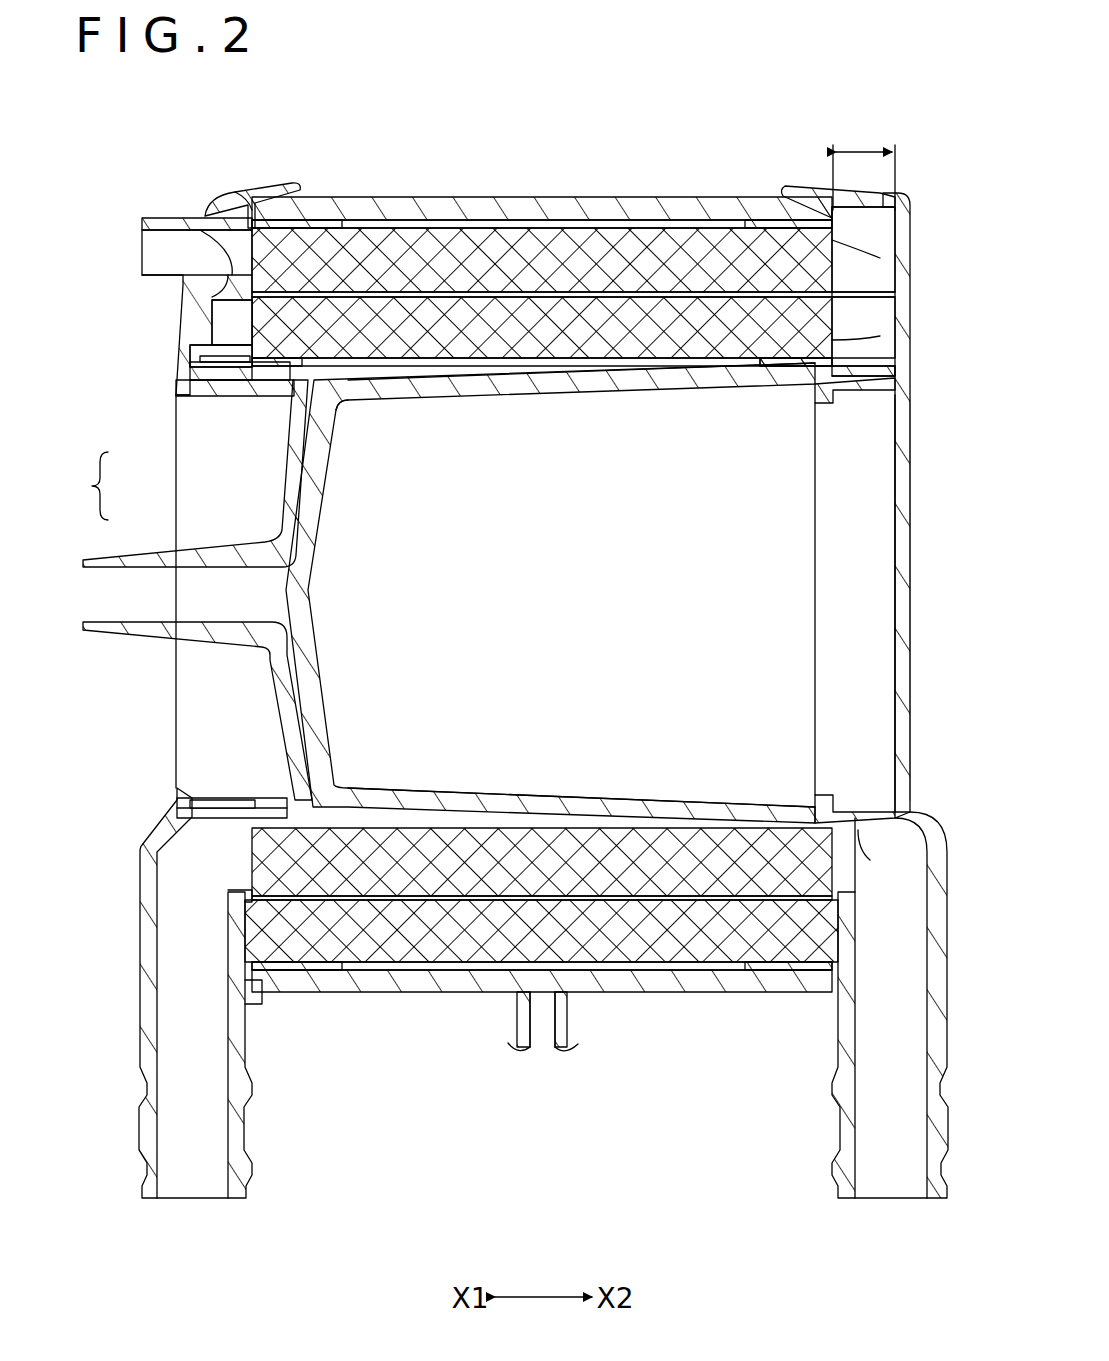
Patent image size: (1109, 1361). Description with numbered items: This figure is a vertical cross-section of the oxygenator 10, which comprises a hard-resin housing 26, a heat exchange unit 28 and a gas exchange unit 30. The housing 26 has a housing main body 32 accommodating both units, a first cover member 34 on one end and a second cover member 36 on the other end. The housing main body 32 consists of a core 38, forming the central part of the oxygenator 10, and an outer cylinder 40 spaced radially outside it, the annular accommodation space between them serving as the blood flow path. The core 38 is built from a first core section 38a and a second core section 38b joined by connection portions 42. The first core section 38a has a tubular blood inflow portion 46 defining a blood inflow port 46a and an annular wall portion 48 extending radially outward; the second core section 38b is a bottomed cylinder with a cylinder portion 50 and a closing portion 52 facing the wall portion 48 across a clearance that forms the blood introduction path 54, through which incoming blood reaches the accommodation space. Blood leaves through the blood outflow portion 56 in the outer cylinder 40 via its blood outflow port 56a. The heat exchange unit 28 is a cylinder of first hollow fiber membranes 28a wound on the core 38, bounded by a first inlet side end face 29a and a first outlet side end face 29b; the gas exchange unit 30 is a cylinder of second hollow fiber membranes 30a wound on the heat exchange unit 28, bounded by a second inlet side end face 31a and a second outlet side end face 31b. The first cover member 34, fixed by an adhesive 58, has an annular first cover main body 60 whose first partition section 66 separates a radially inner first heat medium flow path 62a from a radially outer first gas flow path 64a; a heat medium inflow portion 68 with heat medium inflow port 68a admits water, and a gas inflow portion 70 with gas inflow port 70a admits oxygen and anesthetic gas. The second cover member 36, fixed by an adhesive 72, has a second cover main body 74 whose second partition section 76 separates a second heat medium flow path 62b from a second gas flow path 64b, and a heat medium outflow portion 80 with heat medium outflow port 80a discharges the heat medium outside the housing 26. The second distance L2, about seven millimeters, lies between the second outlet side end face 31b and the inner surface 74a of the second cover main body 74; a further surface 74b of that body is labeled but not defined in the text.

The oxygenator 10 is at (300, 93).
The housing 26 is at (768, 172).
The heat exchange unit 28 is at (652, 385).
The first hollow fiber membrane 28a is at (622, 378).
The first inlet side end face 29a is at (232, 332).
The first outlet side end face 29b is at (840, 338).
The gas exchange unit 30 is at (412, 224).
The second hollow fiber membrane 30a is at (560, 242).
The second inlet side end face 31a is at (218, 240).
The second outlet side end face 31b is at (836, 258).
The housing main body 32 is at (362, 197).
The first cover member 34 is at (176, 326).
The second cover member 36 is at (912, 290).
The core 38 is at (81, 486).
The first core section 38a is at (280, 465).
The second core section 38b is at (300, 505).
The outer cylinder 40 is at (642, 216).
The connection portion 42 is at (338, 402).
The blood inflow portion 46 is at (156, 630).
The blood inflow port 46a is at (118, 597).
The wall portion 48 is at (284, 697).
The cylinder portion 50 is at (552, 803).
The closing portion 52 is at (300, 632).
The blood introduction path 54 is at (305, 718).
The blood outflow portion 56 is at (562, 1020).
The blood outflow port 56a is at (540, 1016).
The adhesive 58 is at (288, 188).
The first cover main body 60 is at (186, 306).
The first heat medium flow path 62a is at (226, 366).
The second heat medium flow path 62b is at (878, 330).
The first gas flow path 64a is at (253, 218).
The second gas flow path 64b is at (878, 225).
The first partition section 66 is at (228, 282).
The heat medium inflow portion 68 is at (237, 1146).
The heat medium inflow port 68a is at (200, 1182).
The gas inflow portion 70 is at (175, 218).
The gas inflow port 70a is at (172, 242).
The adhesive 72 is at (762, 224).
The second cover main body 74 is at (900, 574).
The inner surface 74a is at (893, 604).
The side wall outer surface 74b is at (908, 640).
The second partition section 76 is at (795, 362).
The heat medium outflow portion 80 is at (845, 1148).
The heat medium outflow port 80a is at (895, 1174).
The second distance L2 is at (864, 165).